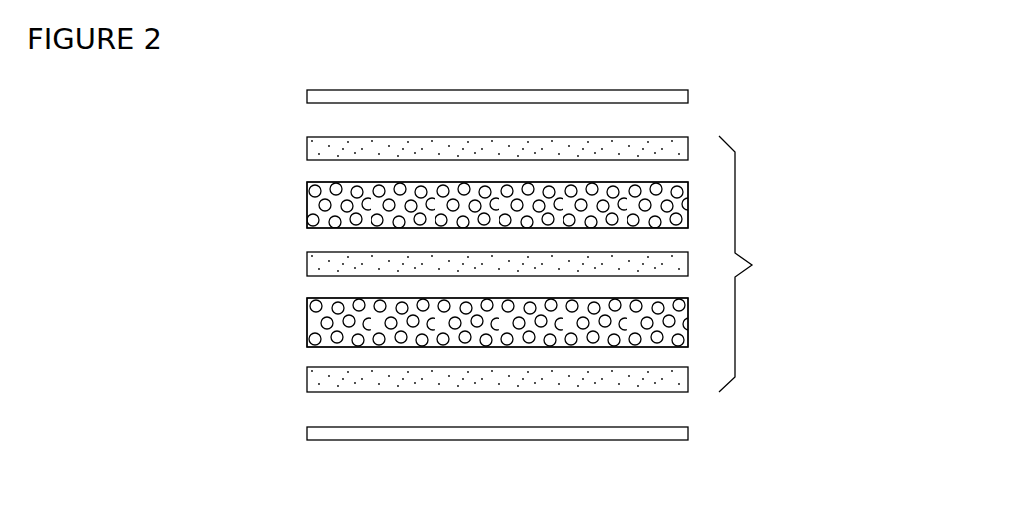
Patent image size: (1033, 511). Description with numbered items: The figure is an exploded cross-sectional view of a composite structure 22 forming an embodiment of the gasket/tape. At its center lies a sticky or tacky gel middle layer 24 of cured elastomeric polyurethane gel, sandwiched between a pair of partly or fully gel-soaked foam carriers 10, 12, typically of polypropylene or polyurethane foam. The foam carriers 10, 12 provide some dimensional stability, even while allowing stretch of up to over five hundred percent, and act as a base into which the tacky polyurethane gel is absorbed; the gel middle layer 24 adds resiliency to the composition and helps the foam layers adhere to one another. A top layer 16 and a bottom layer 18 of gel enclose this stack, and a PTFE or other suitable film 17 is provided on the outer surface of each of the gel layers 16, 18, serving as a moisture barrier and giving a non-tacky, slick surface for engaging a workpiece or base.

The PTFE film 17 is at (393, 90).
The top layer 16 is at (307, 148).
The foam carrier 10 is at (307, 206).
The foam carrier 12 is at (497, 264).
The gel middle layer 24 is at (307, 264).
The bottom layer 18 is at (307, 380).
The composite structure 22 is at (833, 264).